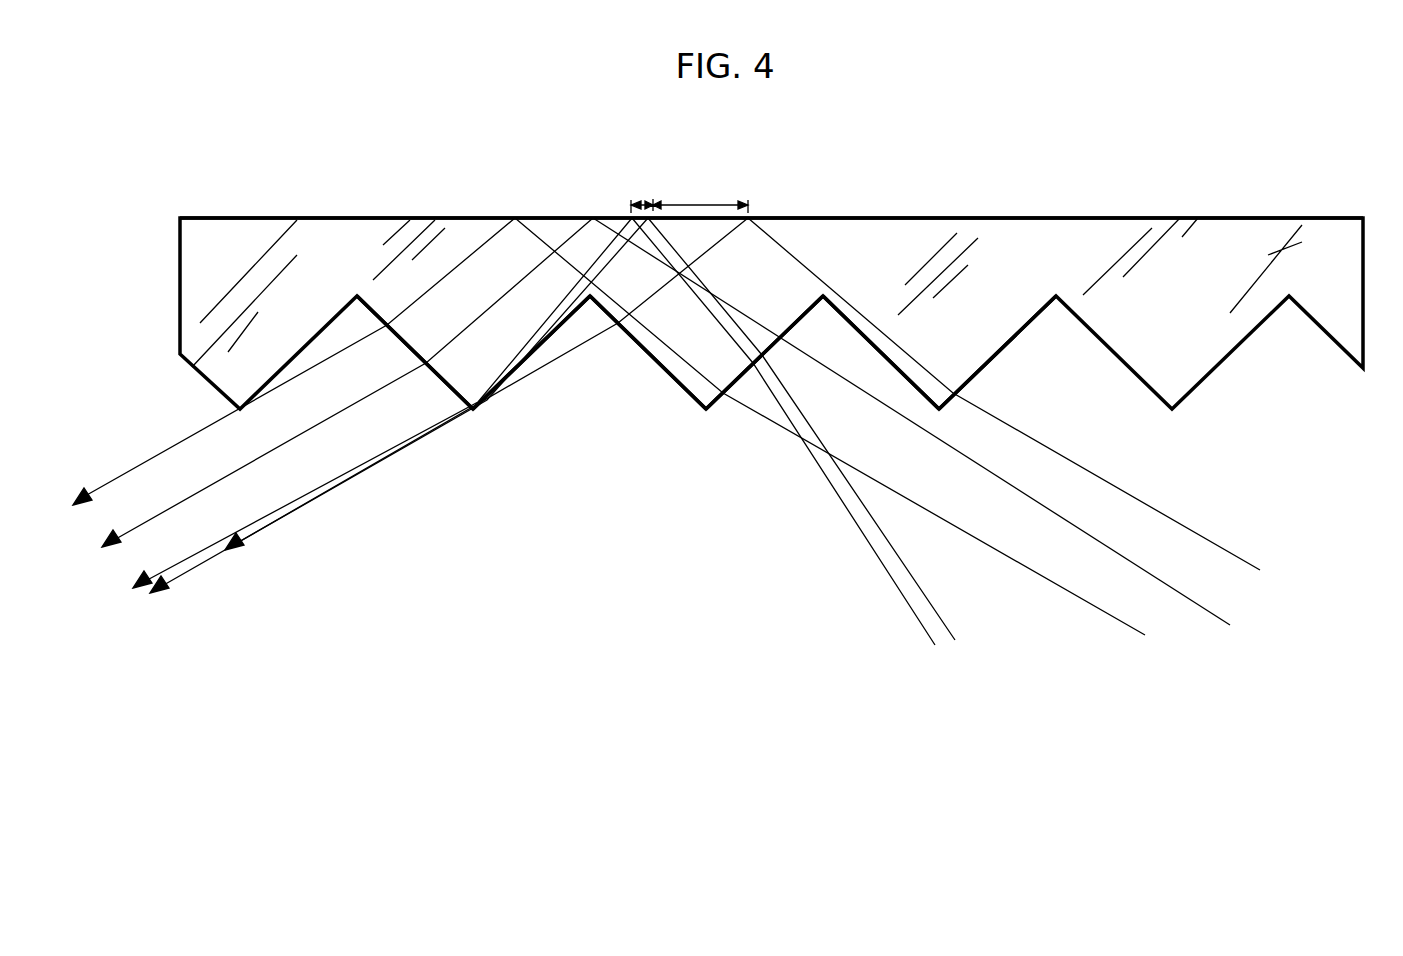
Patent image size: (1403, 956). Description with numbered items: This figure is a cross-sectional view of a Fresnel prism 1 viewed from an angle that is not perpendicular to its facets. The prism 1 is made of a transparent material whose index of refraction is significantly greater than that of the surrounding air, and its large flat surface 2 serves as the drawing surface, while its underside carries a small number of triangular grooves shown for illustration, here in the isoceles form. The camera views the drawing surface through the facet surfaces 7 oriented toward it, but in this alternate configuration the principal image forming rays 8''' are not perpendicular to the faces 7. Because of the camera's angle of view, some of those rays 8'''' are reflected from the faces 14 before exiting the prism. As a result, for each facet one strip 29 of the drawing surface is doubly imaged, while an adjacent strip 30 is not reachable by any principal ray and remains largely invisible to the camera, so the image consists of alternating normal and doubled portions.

The Fresnel prism 1 is at (1348, 268).
The flat surface 2 is at (1003, 216).
The facet surfaces 7 is at (446, 381).
The faces 14 is at (502, 386).
The doubly imaged strip 29 is at (644, 203).
The invisible strip 30 is at (703, 203).
The principal image forming rays 8''' is at (333, 382).
The reflected principal image forming rays 8'''' is at (440, 408).